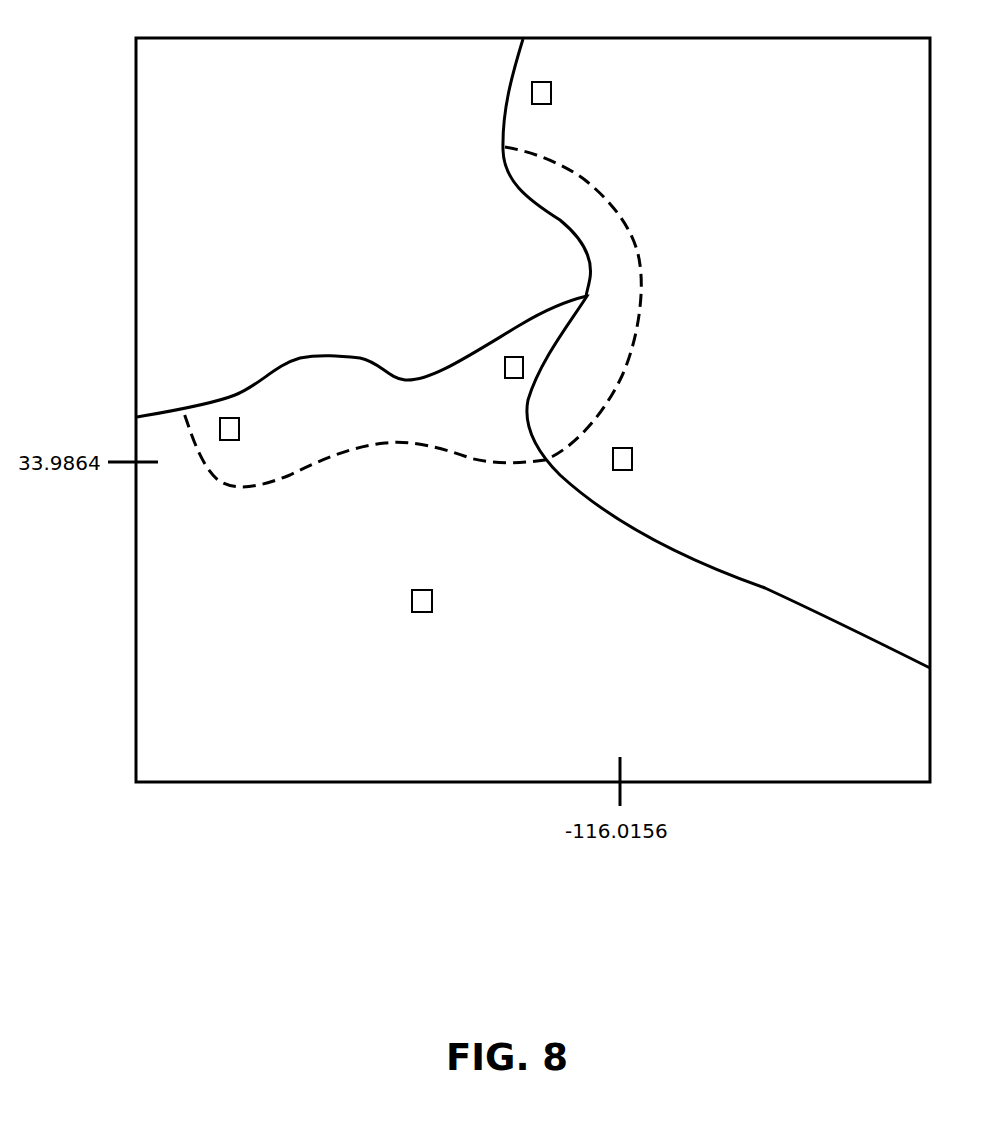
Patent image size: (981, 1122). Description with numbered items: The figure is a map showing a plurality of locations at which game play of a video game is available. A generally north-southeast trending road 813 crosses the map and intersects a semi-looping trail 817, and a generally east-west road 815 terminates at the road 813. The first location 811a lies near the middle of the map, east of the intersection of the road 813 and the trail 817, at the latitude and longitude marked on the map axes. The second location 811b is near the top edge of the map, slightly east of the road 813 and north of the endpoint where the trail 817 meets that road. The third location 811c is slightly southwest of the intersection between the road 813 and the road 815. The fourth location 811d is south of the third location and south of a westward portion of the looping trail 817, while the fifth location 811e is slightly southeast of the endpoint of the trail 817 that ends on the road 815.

The first location 811a is at (632, 458).
The second location 811b is at (551, 90).
The third location 811c is at (505, 373).
The fourth location 811d is at (432, 600).
The fifth location 811e is at (239, 427).
The road 813 is at (765, 588).
The road 815 is at (335, 355).
The trail 817 is at (643, 272).